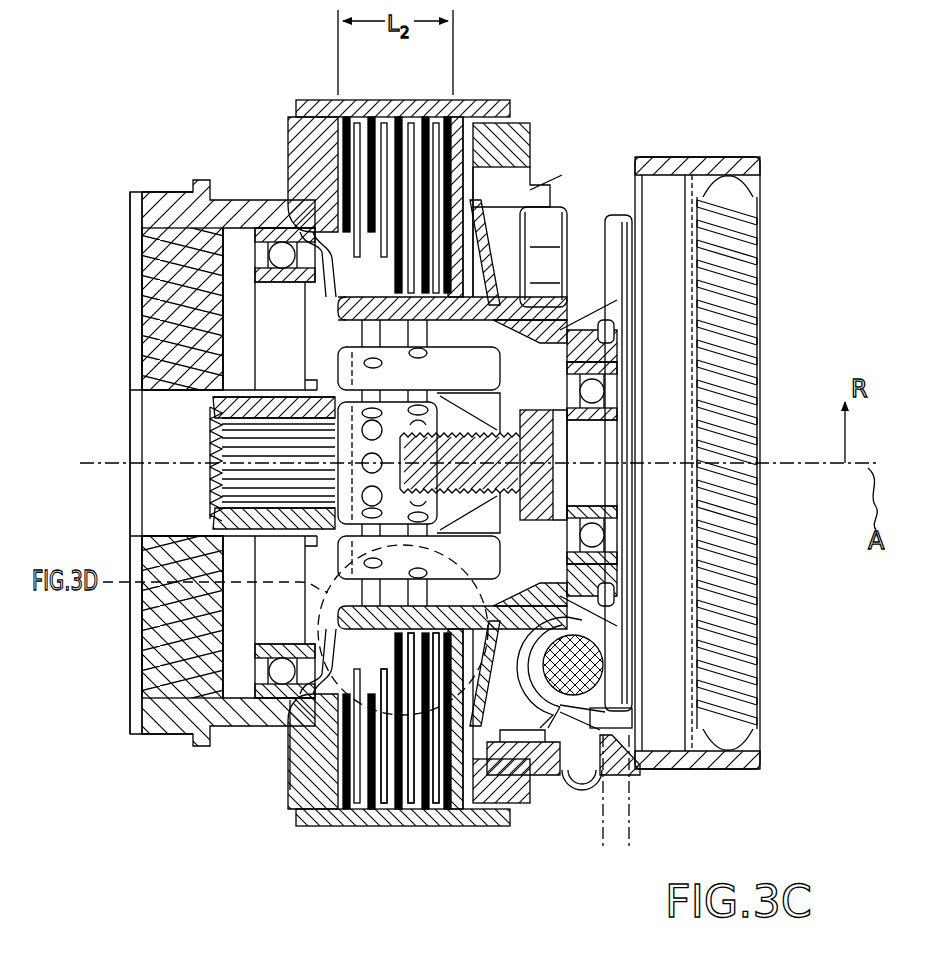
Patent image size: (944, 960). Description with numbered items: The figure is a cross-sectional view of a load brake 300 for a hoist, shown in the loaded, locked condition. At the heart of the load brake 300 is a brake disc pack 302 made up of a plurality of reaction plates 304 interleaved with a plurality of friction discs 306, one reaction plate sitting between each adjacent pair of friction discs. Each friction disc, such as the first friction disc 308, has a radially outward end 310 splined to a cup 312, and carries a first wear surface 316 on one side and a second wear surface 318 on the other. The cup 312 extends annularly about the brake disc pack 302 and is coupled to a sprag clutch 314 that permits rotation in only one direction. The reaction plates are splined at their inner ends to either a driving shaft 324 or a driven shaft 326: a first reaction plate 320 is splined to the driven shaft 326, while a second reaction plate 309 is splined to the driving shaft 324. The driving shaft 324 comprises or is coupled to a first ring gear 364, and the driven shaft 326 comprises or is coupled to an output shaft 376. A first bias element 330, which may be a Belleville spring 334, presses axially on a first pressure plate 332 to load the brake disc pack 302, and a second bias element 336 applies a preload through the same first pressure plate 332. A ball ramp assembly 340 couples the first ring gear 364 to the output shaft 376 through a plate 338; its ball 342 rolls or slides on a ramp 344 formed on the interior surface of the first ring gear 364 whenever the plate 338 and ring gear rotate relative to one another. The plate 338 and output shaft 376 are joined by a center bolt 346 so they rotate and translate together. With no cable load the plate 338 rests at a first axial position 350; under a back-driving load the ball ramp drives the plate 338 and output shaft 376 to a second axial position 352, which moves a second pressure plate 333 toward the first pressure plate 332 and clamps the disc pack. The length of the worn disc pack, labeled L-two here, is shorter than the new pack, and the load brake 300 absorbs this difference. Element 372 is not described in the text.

The load brake 300 is at (152, 62).
The brake disc pack 302 is at (347, 88).
The plurality of reaction plates 304 is at (432, 133).
The plurality of friction discs 306 is at (466, 110).
The first friction disc 308 is at (304, 829).
The second reaction plate 309 is at (432, 807).
The radially outward end 310 is at (346, 805).
The cup 312 is at (297, 768).
The sprag clutch 314 is at (137, 322).
The first wear surface 316 is at (300, 778).
The second wear surface 318 is at (378, 810).
The first reaction plate 320 is at (404, 812).
The driving shaft 324 is at (483, 250).
The driven shaft 326 is at (333, 268).
The first bias element 330 is at (483, 297).
The first pressure plate 332 is at (533, 150).
The second pressure plate 333 is at (322, 152).
The Belleville spring 334 is at (490, 250).
The second bias element 336 is at (508, 152).
The plate 338 is at (600, 643).
The ball ramp assembly 340 is at (592, 663).
The ball 342 is at (598, 672).
The ramp 344 is at (532, 786).
The center bolt 346 is at (545, 455).
The first axial position 350 is at (603, 820).
The second axial position 352 is at (630, 830).
The first ring gear 364 is at (735, 168).
The hub carrier 372 is at (335, 300).
The output shaft 376 is at (228, 400).